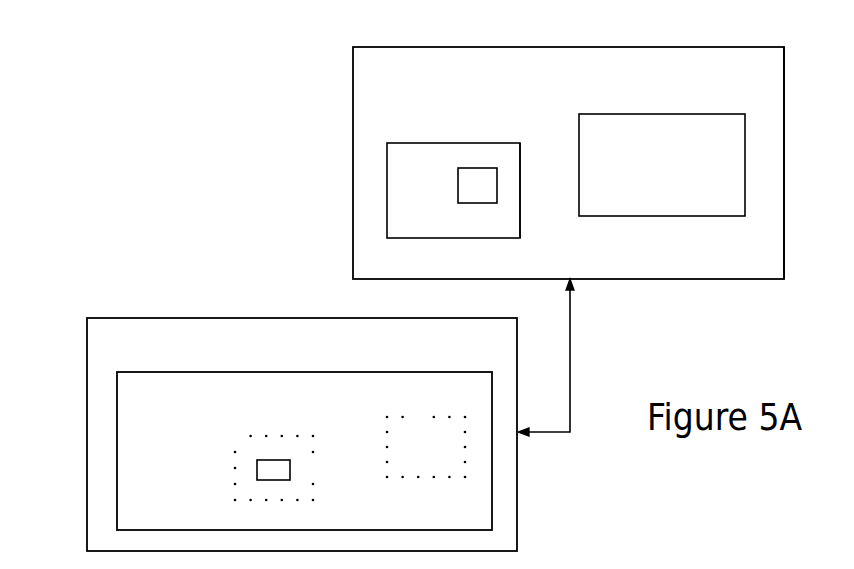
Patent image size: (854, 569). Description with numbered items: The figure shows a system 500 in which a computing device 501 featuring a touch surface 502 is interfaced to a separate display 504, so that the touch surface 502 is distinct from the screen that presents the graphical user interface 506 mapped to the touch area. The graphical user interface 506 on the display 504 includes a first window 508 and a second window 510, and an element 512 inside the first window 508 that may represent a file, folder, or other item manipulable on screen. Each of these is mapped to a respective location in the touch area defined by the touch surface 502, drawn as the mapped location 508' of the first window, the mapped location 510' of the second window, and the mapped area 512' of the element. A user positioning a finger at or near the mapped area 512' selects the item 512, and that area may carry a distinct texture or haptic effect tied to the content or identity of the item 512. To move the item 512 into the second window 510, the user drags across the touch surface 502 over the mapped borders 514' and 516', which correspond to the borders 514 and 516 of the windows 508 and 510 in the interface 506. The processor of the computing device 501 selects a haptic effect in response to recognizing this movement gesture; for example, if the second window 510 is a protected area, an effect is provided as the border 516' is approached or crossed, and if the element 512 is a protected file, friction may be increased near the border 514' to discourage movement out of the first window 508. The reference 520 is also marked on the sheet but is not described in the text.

The system 500 is at (163, 94).
The computing device 501 is at (412, 345).
The touch surface 502 is at (397, 398).
The display 504 is at (623, 75).
The graphical user interface 506 is at (773, 65).
The window 508 is at (453, 161).
The mapped location of window 508' is at (231, 458).
The window 510 is at (662, 139).
The mapped location of window 510' is at (430, 430).
The element 512 is at (446, 188).
The mapped area of element 512' is at (221, 480).
The border of window 514 is at (542, 168).
The mapped border 514' is at (345, 485).
The border of window 516 is at (661, 165).
The mapped border 516' is at (382, 438).
The process indicator 520 is at (685, 559).